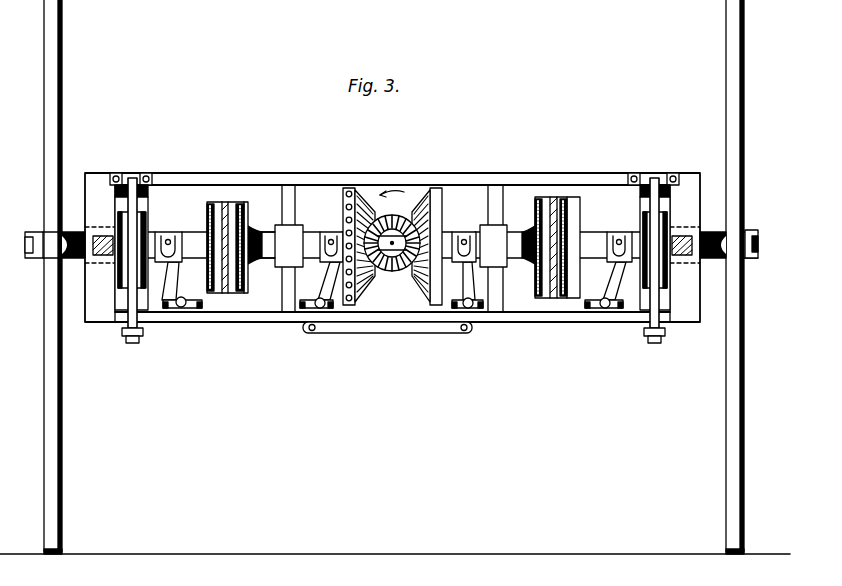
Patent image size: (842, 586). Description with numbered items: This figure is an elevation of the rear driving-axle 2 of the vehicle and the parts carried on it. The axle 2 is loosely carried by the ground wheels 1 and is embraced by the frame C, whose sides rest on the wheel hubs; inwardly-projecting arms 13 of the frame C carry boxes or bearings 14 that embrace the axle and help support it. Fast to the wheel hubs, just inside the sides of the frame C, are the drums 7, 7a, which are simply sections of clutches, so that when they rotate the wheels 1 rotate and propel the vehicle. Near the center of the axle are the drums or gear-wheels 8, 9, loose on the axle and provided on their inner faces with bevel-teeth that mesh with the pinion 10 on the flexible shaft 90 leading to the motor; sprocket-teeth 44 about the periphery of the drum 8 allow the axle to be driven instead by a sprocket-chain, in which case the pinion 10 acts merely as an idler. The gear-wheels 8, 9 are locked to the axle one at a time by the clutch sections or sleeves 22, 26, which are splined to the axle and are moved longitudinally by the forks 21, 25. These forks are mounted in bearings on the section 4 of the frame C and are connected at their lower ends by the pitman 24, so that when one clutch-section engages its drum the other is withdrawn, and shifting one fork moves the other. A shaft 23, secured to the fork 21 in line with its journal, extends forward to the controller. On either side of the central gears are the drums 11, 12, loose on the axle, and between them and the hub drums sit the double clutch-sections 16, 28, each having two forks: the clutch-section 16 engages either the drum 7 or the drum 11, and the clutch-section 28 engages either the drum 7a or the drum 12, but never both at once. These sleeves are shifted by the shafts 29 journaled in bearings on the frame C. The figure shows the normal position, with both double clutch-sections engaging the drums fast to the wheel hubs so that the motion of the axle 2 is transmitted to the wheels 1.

The wheels 1 is at (43, 352).
The driving-axle 2 is at (316, 233).
The section of frame 4 is at (396, 315).
The drum 7 is at (147, 211).
The drum 7a is at (640, 205).
The drum or gear-wheel 8 is at (362, 194).
The drum or gear-wheel 9 is at (440, 196).
The pinion 10 is at (402, 274).
The drum 11 is at (214, 205).
The drum 12 is at (576, 276).
The inwardly-projecting arms 13 is at (284, 212).
The box or bearing 14 is at (391, 246).
The clutch-section 16 is at (183, 233).
The fork 21 is at (302, 306).
The clutch section or sleeve 22 is at (347, 190).
The shaft 23 is at (322, 310).
The pitman 24 is at (438, 333).
The fork 25 is at (470, 310).
The clutch section or sleeve 26 is at (456, 233).
The clutch-section 28 is at (614, 234).
The shafts 29 is at (182, 309).
The sprocket-teeth 44 is at (444, 195).
The shaft 90 is at (395, 240).
The frame C is at (541, 320).